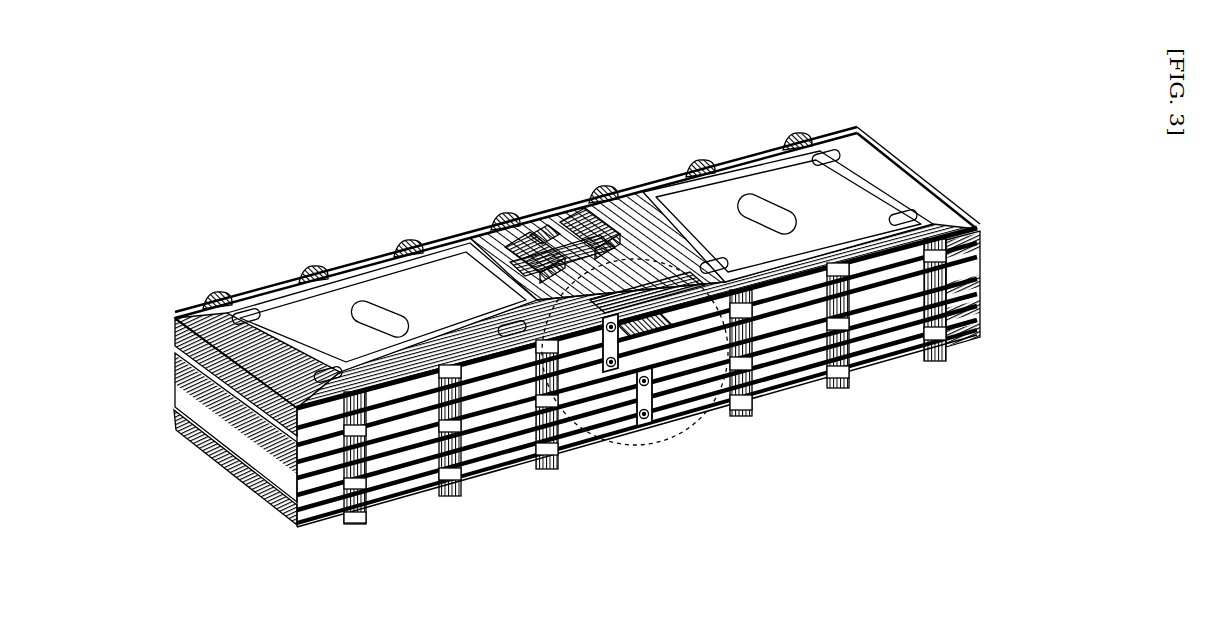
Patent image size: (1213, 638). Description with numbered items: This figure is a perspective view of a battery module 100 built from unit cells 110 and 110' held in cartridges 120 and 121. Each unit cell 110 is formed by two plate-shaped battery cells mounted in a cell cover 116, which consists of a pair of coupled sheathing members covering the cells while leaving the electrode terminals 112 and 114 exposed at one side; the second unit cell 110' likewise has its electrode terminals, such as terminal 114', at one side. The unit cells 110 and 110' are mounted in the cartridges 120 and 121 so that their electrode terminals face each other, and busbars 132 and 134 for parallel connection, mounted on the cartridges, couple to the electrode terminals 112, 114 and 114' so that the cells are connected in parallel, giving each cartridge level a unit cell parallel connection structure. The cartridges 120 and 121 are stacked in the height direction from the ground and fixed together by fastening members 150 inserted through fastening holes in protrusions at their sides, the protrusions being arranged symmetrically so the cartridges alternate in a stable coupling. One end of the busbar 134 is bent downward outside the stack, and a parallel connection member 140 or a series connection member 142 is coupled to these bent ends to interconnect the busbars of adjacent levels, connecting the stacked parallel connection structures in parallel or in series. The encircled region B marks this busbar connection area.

The battery module 100 is at (220, 82).
The unit cell 110 is at (375, 309).
The unit cell 110' is at (788, 180).
The electrode terminal 112 is at (523, 248).
The electrode terminal 114 is at (496, 233).
The electrode terminal 114' is at (647, 214).
The cell cover 116 is at (358, 263).
The cartridge 120 is at (180, 330).
The cartridge 121 is at (978, 273).
The busbar for parallel connection 132 is at (538, 231).
The busbar for parallel connection 134 is at (648, 343).
The parallel connection member 140 is at (630, 430).
The series connection member 142 is at (620, 427).
The fastening member 150 is at (515, 463).
The detail region B is at (677, 434).